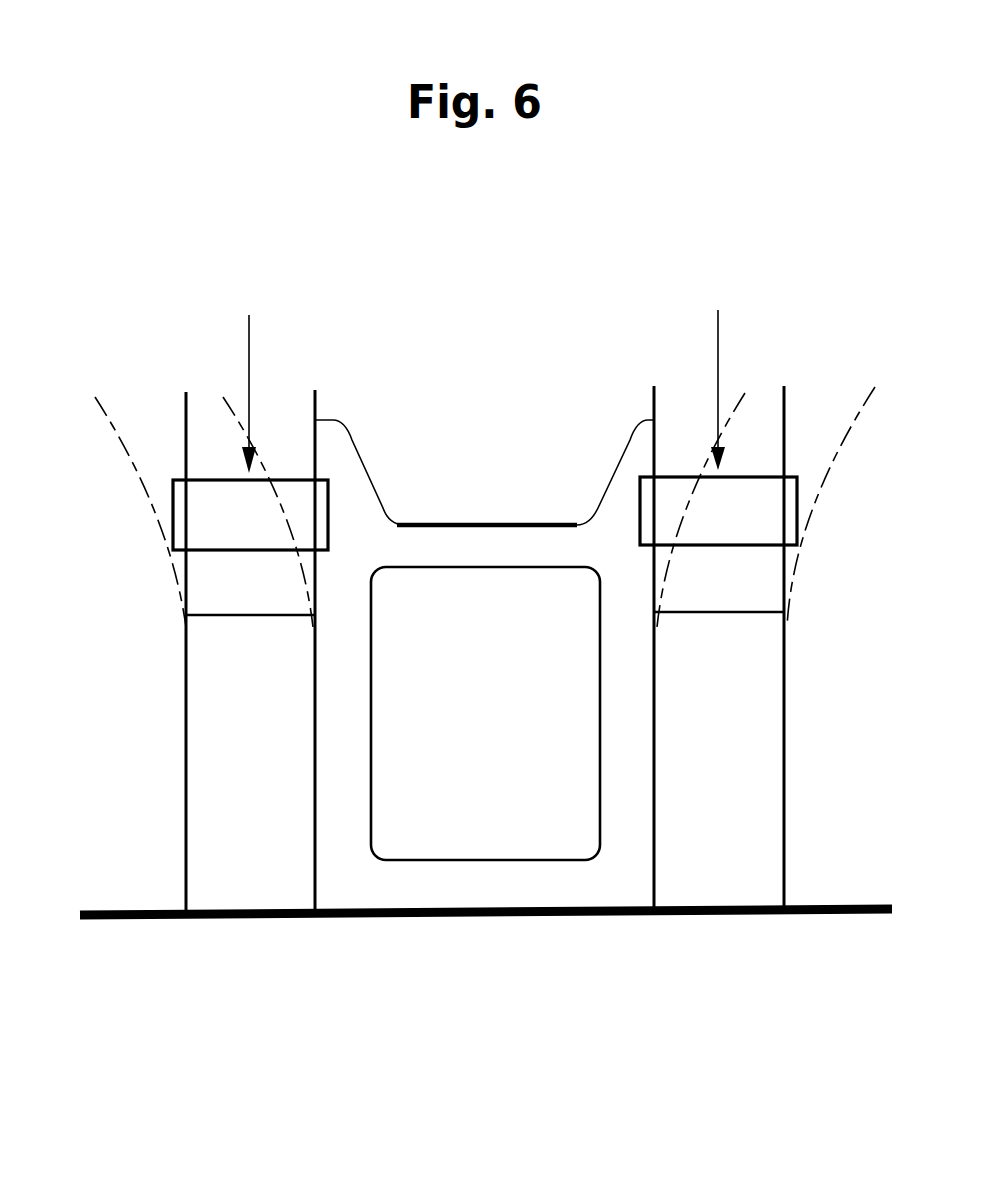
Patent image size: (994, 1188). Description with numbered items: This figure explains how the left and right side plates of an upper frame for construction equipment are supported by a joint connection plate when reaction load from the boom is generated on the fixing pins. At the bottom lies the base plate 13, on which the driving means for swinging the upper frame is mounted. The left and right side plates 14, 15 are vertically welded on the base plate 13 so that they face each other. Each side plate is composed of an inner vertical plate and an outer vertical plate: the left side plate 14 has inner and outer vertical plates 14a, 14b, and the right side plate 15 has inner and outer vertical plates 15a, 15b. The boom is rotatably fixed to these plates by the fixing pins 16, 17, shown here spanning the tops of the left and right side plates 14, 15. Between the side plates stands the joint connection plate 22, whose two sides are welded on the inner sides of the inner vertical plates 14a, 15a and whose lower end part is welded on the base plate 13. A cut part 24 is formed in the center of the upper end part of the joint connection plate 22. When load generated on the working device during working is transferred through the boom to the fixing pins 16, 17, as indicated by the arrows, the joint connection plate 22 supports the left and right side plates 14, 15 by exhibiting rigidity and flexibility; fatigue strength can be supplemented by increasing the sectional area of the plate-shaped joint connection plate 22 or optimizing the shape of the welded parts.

The base plate 13 is at (113, 923).
The left side plate 14 is at (308, 742).
The inner vertical plate 14a is at (317, 787).
The outer vertical plate 14b is at (187, 847).
The right side plate 15 is at (775, 739).
The inner vertical plate 15a is at (655, 787).
The outer vertical plate 15b is at (785, 787).
The fixing pin 16 is at (205, 480).
The fixing pin 17 is at (760, 473).
The joint connection plate 22 is at (602, 880).
The cut part 24 is at (457, 473).